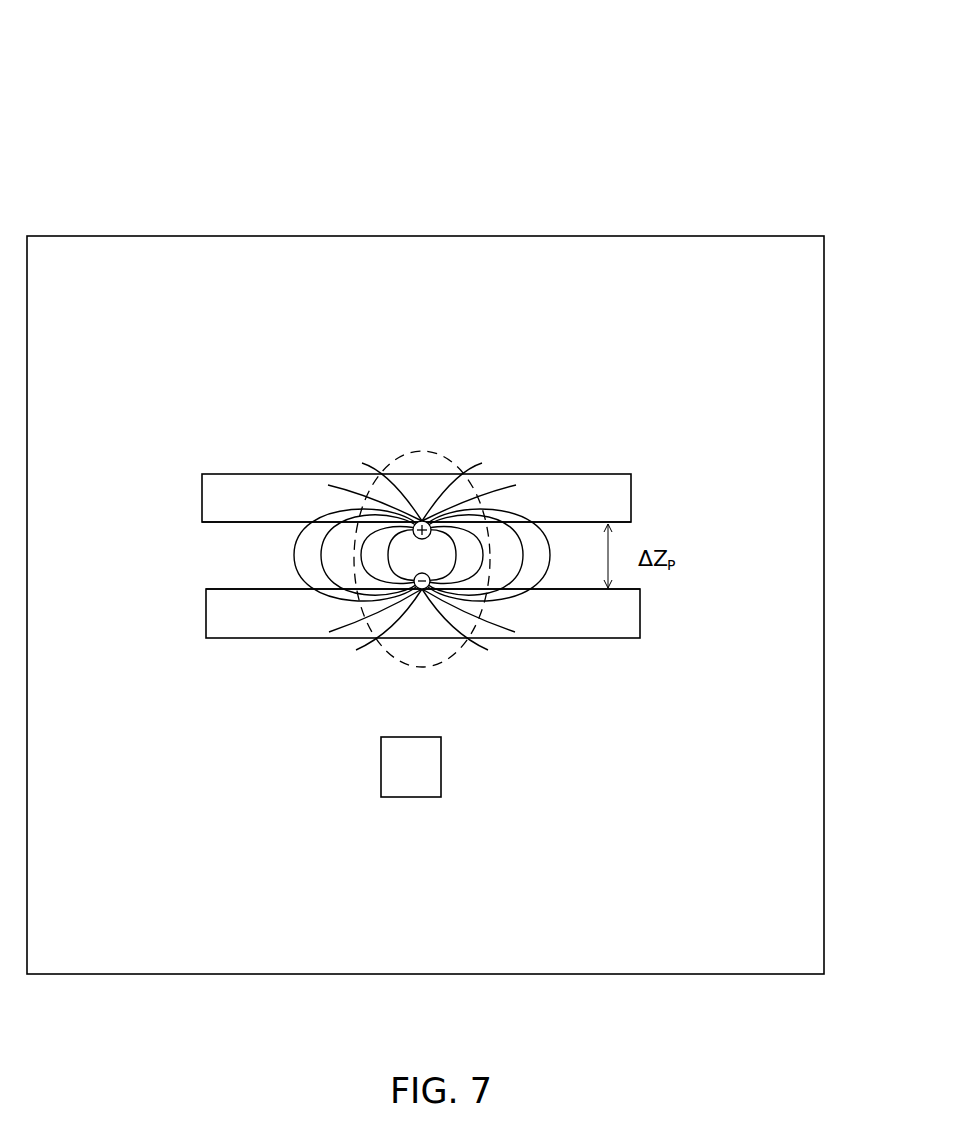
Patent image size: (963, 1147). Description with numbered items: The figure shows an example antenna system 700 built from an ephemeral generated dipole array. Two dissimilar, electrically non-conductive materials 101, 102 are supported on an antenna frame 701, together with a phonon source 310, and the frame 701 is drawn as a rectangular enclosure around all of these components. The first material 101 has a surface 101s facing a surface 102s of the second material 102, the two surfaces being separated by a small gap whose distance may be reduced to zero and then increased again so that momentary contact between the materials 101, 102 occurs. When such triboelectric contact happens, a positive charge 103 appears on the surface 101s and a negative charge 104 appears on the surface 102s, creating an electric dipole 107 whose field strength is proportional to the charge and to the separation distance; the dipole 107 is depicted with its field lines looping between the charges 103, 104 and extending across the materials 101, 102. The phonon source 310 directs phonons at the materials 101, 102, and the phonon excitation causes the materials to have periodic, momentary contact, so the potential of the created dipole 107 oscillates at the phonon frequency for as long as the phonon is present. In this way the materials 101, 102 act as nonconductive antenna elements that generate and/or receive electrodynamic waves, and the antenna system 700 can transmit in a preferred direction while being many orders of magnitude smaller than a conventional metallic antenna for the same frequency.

The antenna system 700 is at (110, 109).
The antenna frame 701 is at (707, 235).
The material 101 is at (565, 474).
The surface of material 101s is at (243, 522).
The material 102 is at (540, 638).
The surface of material 102s is at (257, 590).
The positive charge 103 is at (418, 522).
The negative charge 104 is at (418, 588).
The electric dipole 107 is at (400, 458).
The phonon source 310 is at (381, 797).